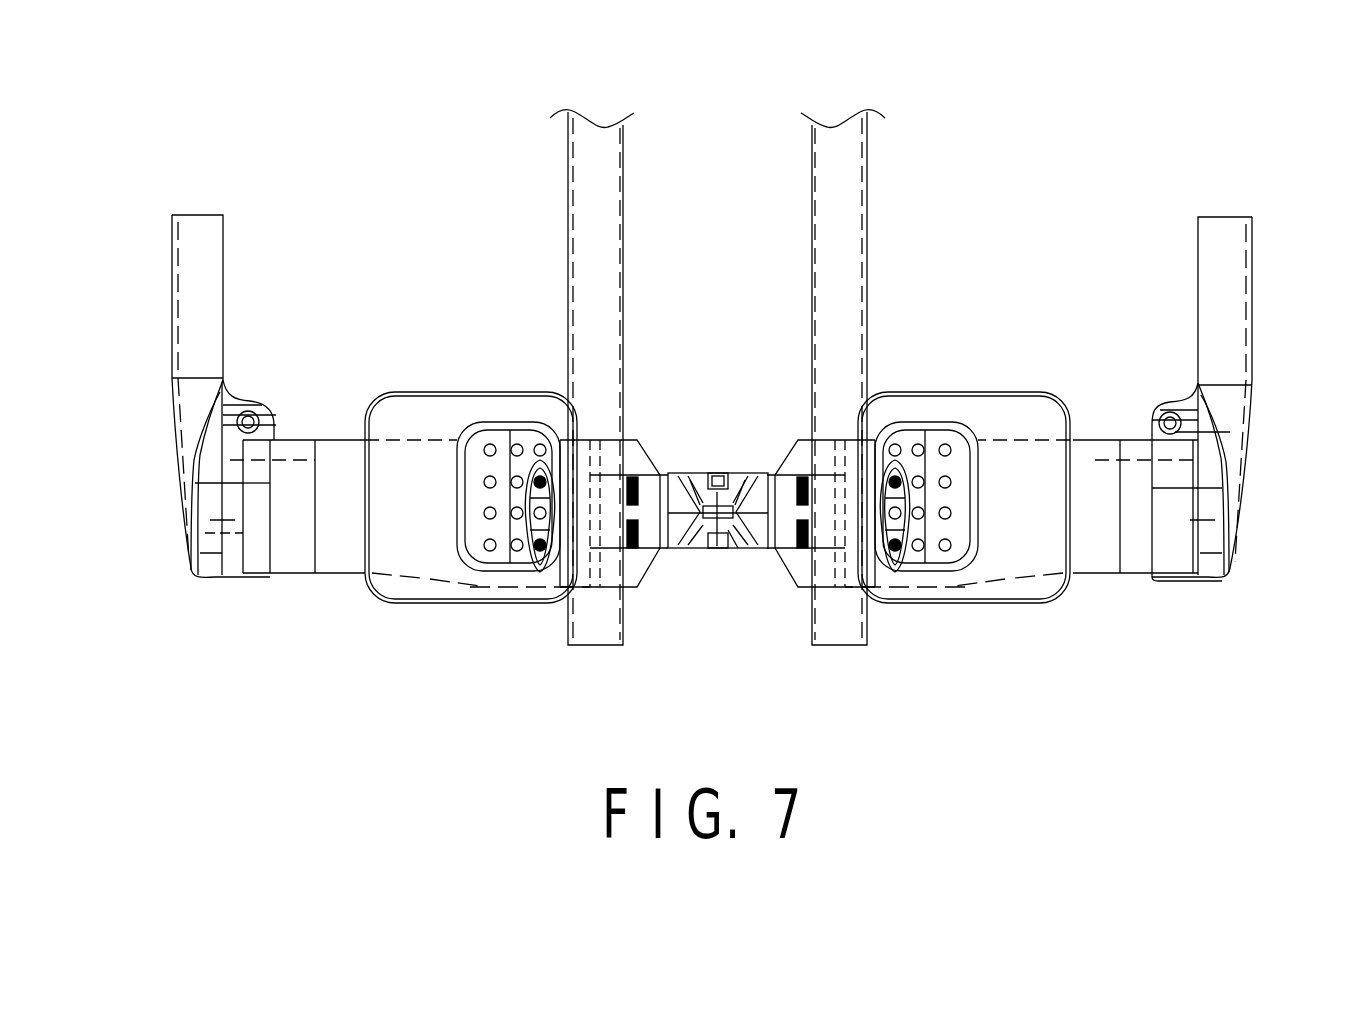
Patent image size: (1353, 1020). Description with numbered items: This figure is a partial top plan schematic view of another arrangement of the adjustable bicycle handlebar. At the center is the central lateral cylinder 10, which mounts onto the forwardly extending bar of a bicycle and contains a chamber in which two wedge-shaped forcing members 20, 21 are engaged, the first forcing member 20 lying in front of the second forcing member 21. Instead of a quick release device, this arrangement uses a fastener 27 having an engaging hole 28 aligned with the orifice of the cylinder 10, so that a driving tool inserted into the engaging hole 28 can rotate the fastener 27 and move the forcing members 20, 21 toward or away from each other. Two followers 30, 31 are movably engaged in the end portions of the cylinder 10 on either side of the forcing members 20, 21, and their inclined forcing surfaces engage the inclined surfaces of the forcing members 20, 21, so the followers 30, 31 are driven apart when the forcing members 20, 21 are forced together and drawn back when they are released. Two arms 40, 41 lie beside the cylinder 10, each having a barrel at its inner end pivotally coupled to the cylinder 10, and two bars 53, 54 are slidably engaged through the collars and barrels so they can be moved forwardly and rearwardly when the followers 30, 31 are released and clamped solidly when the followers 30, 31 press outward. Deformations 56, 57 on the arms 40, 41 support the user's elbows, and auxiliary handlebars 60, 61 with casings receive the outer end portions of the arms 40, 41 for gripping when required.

The central lateral cylinder 10 is at (712, 551).
The first forcing member 20 is at (743, 486).
The second forcing member 21 is at (738, 551).
The fastener 27 is at (698, 476).
The engaging hole 28 is at (717, 470).
The follower 30 is at (757, 520).
The follower 31 is at (682, 525).
The arm 40 is at (1098, 555).
The arm 41 is at (337, 547).
The bar 53 is at (850, 192).
The bar 54 is at (585, 195).
The deformation 56 is at (1020, 400).
The deformation 57 is at (443, 398).
The auxiliary handlebar 60 is at (1250, 345).
The auxiliary handlebar 61 is at (185, 330).